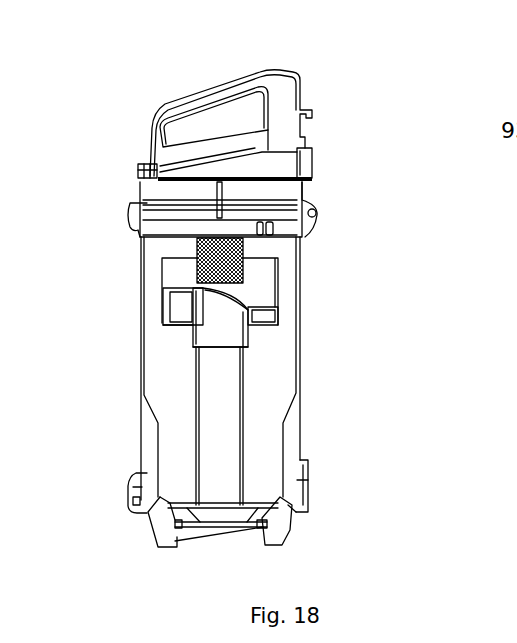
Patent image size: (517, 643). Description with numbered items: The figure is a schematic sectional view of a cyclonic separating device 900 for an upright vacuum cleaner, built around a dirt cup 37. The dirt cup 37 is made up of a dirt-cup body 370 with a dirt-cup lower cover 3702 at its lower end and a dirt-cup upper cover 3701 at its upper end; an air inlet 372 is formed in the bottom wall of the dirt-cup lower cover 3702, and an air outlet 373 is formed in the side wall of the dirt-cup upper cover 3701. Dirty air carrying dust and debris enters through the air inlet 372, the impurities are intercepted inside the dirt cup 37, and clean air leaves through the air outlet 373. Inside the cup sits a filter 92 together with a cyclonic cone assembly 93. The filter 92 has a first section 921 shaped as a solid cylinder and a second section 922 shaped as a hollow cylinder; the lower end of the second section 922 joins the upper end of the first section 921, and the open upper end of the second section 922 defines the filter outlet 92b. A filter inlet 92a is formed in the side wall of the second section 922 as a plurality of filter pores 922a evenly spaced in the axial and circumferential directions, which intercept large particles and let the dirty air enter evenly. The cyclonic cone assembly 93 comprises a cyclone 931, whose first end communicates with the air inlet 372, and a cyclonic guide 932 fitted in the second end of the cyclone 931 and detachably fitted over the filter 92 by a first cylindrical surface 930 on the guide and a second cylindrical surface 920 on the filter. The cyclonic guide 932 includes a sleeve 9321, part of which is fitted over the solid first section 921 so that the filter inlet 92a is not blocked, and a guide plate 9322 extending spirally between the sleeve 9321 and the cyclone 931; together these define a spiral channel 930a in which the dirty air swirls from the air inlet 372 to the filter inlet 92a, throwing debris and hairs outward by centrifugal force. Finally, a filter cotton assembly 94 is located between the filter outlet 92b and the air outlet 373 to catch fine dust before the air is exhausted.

The cyclonic separating device 900 is at (253, 55).
The dirt-cup upper cover 3701 is at (300, 104).
The air outlet 373 is at (310, 163).
The filter cotton assembly 94 is at (250, 182).
The filter outlet 92b is at (217, 233).
The dirt cup 37 is at (140, 417).
The spiral channel 930a is at (180, 273).
The filter inlet 92a is at (320, 266).
The filter pores 922a is at (243, 247).
The filter 92 is at (137, 313).
The first section 921 is at (213, 332).
The second section 922 is at (175, 291).
The second cylindrical surface 920 is at (192, 327).
The first cylindrical surface 930 is at (195, 332).
The cyclonic cone assembly 93 is at (344, 347).
The cyclone 931 is at (248, 292).
The cyclonic guide 932 is at (347, 356).
The guide plate 9322 is at (262, 308).
The sleeve 9321 is at (253, 312).
The dirt-cup body 370 is at (242, 348).
The air inlet 372 is at (218, 530).
The dirt-cup lower cover 3702 is at (277, 518).